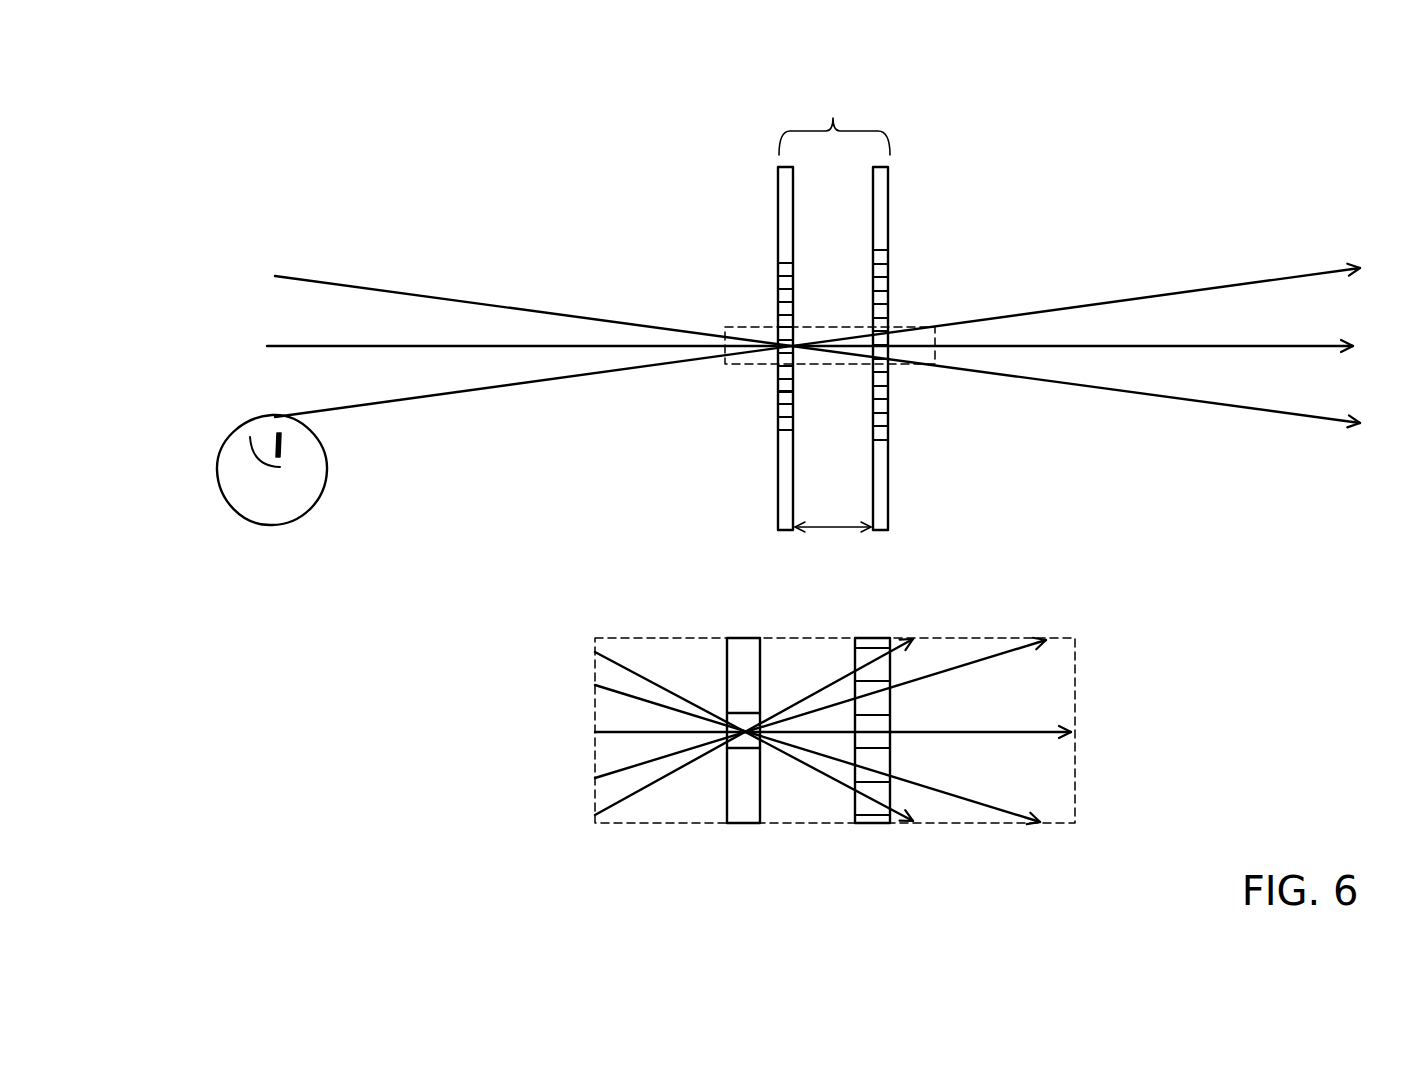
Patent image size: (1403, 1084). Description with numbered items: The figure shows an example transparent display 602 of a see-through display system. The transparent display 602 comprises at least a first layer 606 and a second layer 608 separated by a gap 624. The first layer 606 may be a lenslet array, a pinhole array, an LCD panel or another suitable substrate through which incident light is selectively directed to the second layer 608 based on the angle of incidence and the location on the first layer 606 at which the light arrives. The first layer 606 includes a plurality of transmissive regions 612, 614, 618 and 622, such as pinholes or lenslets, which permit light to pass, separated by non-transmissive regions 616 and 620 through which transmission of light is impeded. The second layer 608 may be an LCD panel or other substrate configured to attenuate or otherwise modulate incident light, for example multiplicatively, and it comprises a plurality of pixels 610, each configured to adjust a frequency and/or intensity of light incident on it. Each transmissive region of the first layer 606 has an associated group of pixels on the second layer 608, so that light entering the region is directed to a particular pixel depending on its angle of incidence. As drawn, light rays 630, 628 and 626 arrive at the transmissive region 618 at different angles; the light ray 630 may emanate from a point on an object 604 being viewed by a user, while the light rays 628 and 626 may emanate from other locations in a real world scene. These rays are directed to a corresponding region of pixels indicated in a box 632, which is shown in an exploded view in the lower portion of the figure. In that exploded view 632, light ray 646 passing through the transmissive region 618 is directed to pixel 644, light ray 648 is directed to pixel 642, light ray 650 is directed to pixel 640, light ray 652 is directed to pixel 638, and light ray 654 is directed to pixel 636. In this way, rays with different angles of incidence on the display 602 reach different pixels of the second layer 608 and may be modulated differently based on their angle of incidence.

The transparent display 602 is at (834, 122).
The object 604 is at (272, 525).
The first layer 606 is at (778, 213).
The second layer 608 is at (888, 213).
The pixels 610 is at (888, 400).
The transmissive region 612 is at (793, 272).
The transmissive region 614 is at (793, 306).
The non-transmissive region 616 is at (778, 328).
The transmissive region 618 is at (797, 345).
The non-transmissive region 620 is at (778, 360).
The transmissive region 622 is at (778, 385).
The gap 624 is at (838, 531).
The light ray 626 is at (513, 301).
The light ray 628 is at (402, 345).
The light ray 630 is at (403, 400).
The box 632 is at (729, 327).
The pixel 636 is at (855, 656).
The pixel 638 is at (882, 702).
The pixel 640 is at (888, 728).
The pixel 642 is at (885, 766).
The pixel 644 is at (863, 803).
The light ray 646 is at (683, 697).
The light ray 648 is at (613, 690).
The light ray 650 is at (627, 732).
The light ray 652 is at (623, 768).
The light ray 654 is at (635, 795).